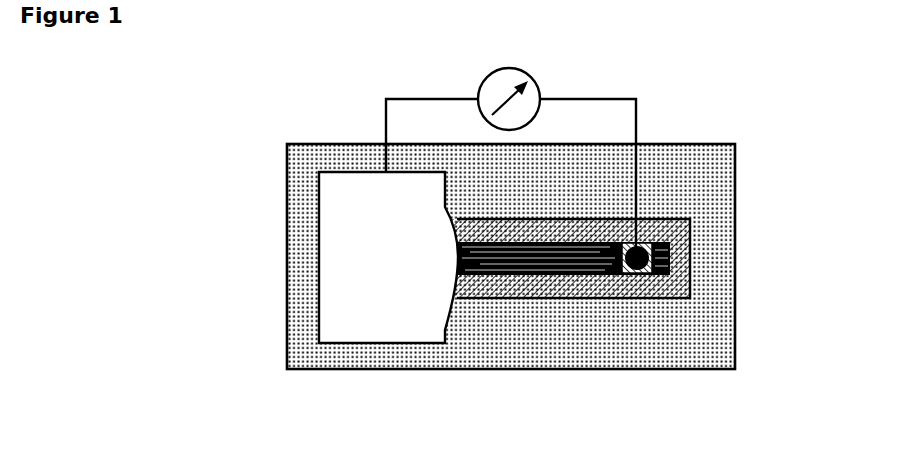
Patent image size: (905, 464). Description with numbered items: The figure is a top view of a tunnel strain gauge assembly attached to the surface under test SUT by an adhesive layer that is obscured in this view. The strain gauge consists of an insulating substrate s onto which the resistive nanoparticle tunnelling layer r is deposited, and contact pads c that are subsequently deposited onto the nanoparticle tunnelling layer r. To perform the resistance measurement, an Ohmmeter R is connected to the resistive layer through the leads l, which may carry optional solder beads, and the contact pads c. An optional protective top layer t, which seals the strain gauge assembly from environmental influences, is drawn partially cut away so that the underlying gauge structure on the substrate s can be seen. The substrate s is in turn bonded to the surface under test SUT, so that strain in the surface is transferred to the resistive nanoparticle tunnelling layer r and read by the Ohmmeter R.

The surface under test SUT is at (645, 337).
The protective top layer t is at (369, 191).
The insulating substrate s is at (672, 285).
The contact pads c is at (687, 218).
The resistive nanoparticle tunnelling layer r is at (688, 258).
The leads l is at (386, 120).
The Ohmmeter R is at (513, 96).